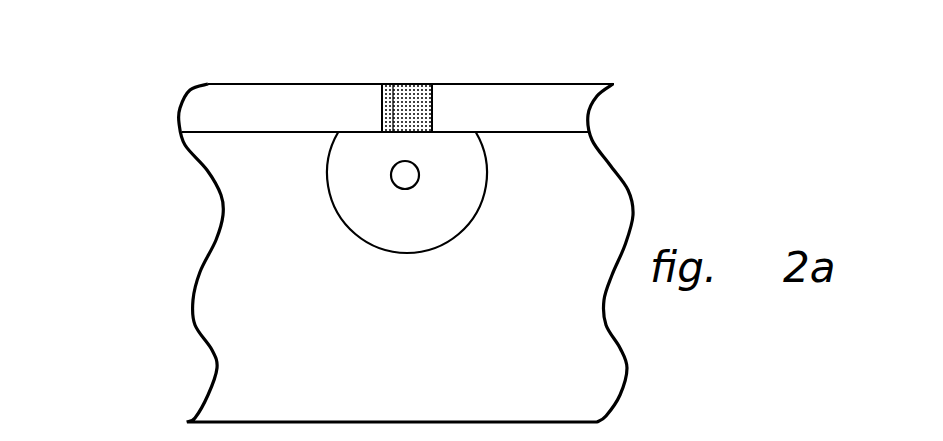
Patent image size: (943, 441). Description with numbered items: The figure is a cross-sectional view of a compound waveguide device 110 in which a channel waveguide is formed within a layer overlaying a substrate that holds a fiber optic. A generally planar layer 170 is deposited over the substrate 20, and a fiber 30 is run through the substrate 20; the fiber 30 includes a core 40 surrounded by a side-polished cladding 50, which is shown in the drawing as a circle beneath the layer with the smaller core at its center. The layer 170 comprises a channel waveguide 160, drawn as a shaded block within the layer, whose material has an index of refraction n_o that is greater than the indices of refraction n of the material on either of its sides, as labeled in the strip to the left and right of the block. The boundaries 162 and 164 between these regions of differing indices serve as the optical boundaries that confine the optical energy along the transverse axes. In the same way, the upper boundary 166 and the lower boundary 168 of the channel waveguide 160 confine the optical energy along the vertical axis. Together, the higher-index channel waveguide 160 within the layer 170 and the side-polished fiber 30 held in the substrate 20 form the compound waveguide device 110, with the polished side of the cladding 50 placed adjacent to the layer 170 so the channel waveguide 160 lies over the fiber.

The compound waveguide device 110 is at (124, 152).
The substrate 20 is at (428, 341).
The fiber 30 is at (487, 188).
The core 40 is at (420, 171).
The side-polished cladding 50 is at (424, 231).
The channel waveguide 160 is at (391, 80).
The boundary 162 is at (372, 98).
The boundary 164 is at (443, 102).
The upper boundary 166 is at (432, 76).
The lower boundary 168 is at (401, 118).
The layer 170 is at (612, 108).